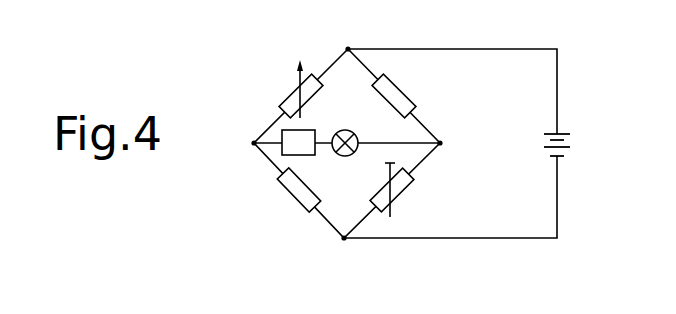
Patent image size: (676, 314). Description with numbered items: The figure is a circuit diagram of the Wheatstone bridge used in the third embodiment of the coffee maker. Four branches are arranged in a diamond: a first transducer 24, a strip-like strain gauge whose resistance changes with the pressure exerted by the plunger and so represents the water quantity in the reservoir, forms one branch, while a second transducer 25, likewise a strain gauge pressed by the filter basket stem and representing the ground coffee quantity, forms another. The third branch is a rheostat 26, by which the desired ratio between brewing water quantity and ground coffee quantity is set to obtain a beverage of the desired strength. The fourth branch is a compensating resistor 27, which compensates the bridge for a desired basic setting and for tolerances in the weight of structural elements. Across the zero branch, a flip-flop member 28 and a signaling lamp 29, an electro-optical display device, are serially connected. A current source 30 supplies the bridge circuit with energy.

The first transducer 24 is at (393, 93).
The second transducer 25 is at (297, 200).
The rheostat 26 is at (283, 102).
The compensating resistor 27 is at (403, 187).
The flip-flop member 28 is at (282, 148).
The signaling lamp 29 is at (351, 155).
The current source 30 is at (562, 157).